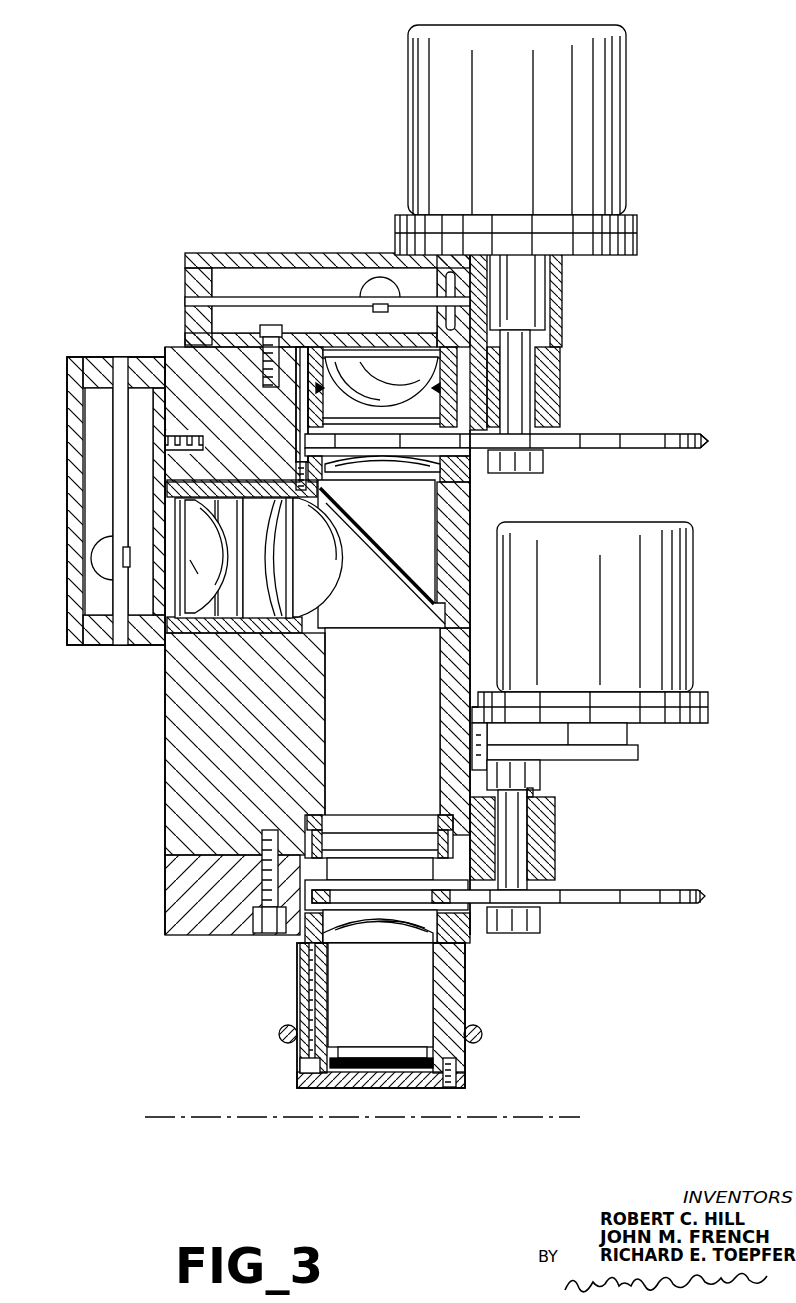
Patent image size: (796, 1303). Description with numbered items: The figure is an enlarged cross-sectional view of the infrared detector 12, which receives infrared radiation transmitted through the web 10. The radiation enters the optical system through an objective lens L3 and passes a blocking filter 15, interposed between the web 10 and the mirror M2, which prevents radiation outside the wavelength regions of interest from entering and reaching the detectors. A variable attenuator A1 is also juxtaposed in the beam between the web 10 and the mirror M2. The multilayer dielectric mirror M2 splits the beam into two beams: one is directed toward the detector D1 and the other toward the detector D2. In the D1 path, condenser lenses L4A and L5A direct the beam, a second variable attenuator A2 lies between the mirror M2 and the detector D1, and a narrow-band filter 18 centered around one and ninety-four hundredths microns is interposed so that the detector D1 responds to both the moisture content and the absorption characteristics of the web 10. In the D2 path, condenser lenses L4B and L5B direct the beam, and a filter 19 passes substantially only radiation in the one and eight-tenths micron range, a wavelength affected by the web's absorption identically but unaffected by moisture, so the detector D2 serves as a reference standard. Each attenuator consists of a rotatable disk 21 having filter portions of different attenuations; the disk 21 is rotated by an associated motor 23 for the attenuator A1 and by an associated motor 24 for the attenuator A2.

The web 10 is at (202, 1118).
The infrared detector 12 is at (165, 750).
The blocking filter 15 is at (370, 892).
The filter 18 is at (348, 424).
The filter 19 is at (245, 578).
The rotatable disk 21 is at (710, 438).
The motor 23 is at (692, 579).
The motor 24 is at (420, 72).
The variable attenuator A1 is at (707, 895).
The second variable attenuator A2 is at (704, 450).
The detector D1 is at (374, 310).
The detector D2 is at (132, 548).
The objective lens L3 is at (370, 927).
The condenser lens L4A is at (358, 462).
The condenser lens L4B is at (282, 557).
The condenser lens L5A is at (388, 375).
The condenser lens L5B is at (195, 585).
The multilayer dielectric mirror M2 is at (373, 538).